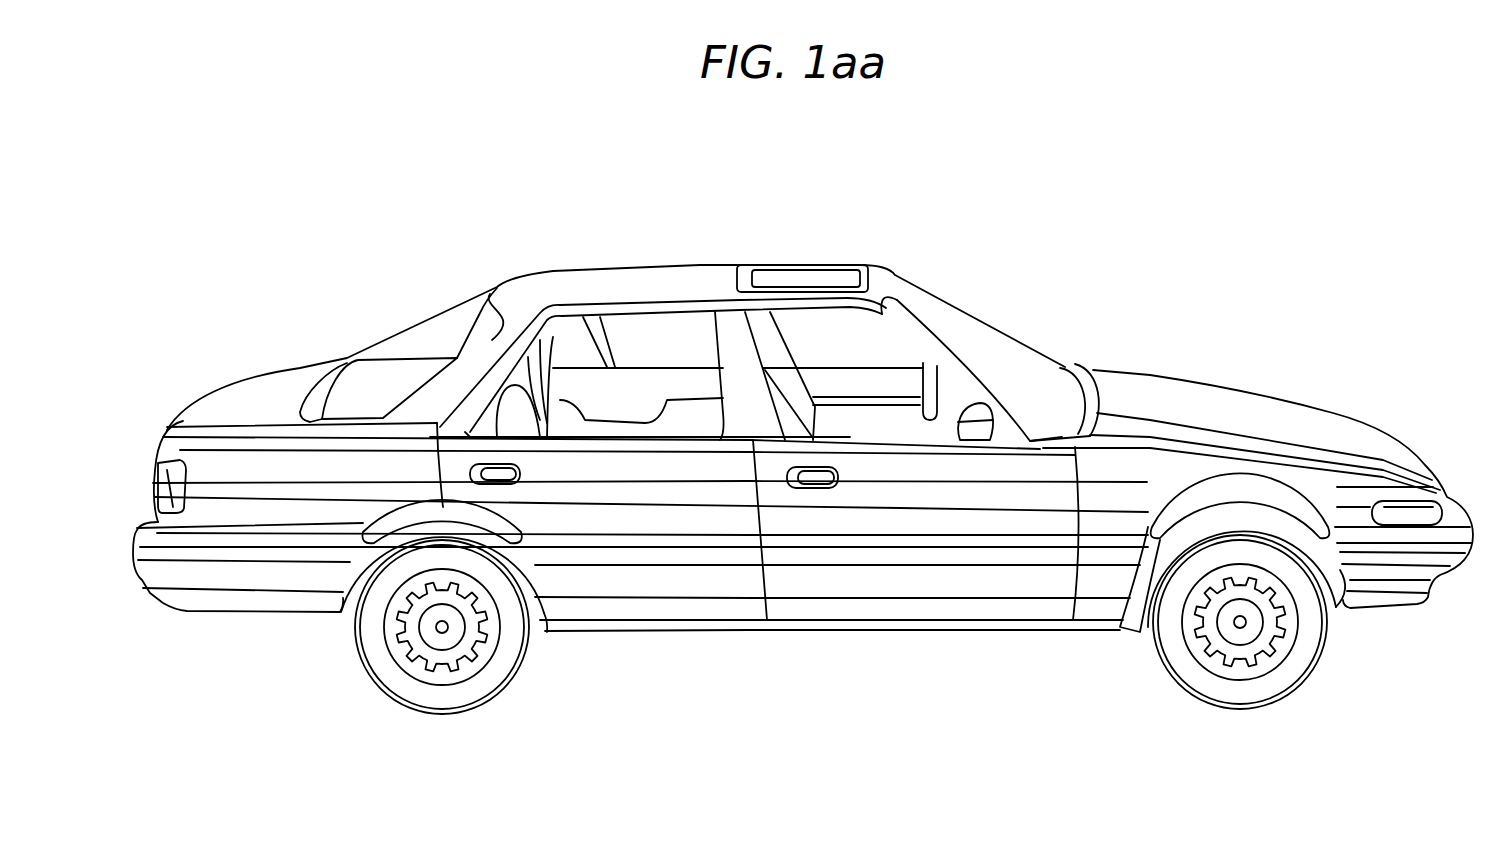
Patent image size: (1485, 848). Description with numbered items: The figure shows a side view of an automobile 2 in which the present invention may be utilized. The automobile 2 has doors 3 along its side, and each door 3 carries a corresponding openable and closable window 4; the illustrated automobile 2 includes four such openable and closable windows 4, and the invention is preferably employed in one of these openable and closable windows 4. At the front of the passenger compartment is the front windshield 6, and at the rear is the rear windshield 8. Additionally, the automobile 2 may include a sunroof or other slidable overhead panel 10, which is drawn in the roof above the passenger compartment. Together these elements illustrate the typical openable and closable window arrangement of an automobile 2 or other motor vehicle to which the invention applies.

The automobile 2 is at (803, 509).
The doors 3 is at (605, 582).
The openable and closable windows 4 is at (585, 385).
The front windshield 6 is at (977, 340).
The rear windshield 8 is at (440, 332).
The sunroof or other slidable overhead panel 10 is at (813, 268).